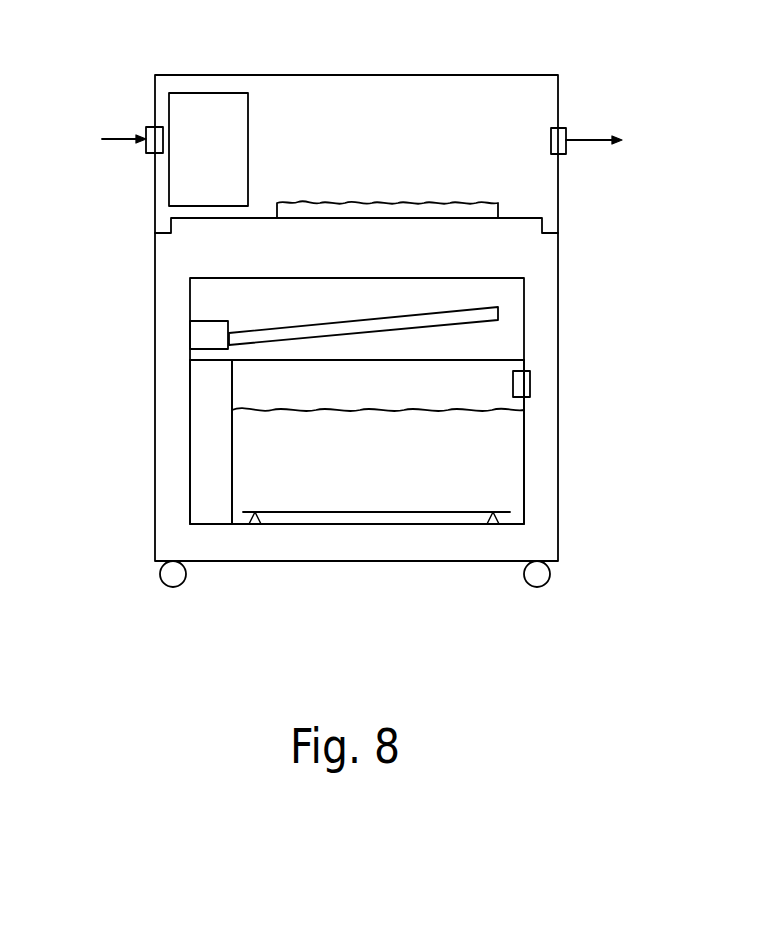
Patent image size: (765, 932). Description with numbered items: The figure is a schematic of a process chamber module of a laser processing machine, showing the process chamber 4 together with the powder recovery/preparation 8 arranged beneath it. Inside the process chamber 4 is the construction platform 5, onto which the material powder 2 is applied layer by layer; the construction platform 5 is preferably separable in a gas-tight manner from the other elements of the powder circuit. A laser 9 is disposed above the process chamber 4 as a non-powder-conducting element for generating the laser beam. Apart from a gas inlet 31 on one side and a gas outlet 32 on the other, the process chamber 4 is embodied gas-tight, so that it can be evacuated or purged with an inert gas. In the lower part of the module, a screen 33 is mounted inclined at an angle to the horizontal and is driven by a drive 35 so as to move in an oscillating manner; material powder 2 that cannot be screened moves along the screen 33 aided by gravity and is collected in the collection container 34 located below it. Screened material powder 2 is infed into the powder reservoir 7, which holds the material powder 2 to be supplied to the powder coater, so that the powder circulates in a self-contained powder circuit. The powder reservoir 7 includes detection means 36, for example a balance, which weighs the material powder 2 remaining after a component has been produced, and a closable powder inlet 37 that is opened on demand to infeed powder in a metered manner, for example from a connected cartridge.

The material powder 2 is at (481, 203).
The process chamber 4 is at (517, 103).
The construction platform 5 is at (536, 232).
The powder reservoir 7 is at (498, 462).
The powder recovery/preparation 8 is at (516, 321).
The laser 9 is at (207, 180).
The gas inlet 31 is at (146, 128).
The gas outlet 32 is at (562, 133).
The screen 33 is at (498, 317).
The collection container 34 is at (208, 438).
The drive 35 is at (208, 332).
The detection means 36 is at (265, 512).
The powder inlet 37 is at (522, 380).